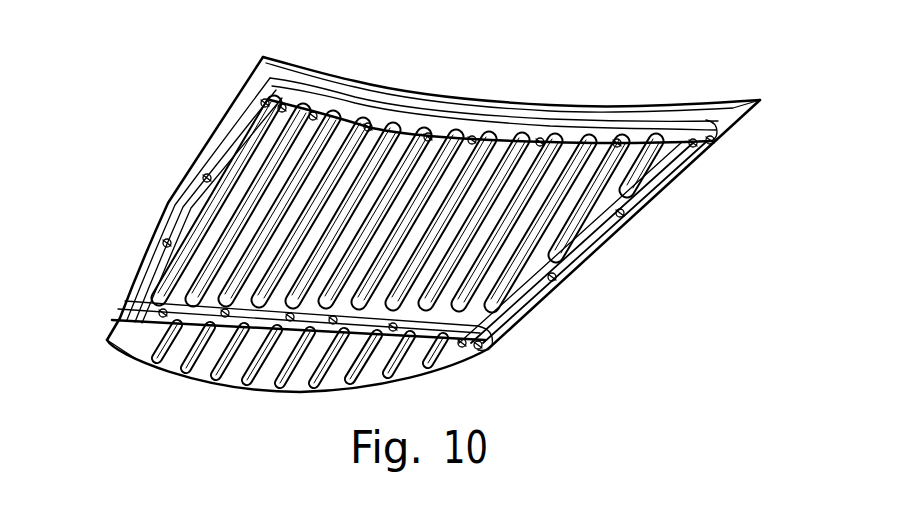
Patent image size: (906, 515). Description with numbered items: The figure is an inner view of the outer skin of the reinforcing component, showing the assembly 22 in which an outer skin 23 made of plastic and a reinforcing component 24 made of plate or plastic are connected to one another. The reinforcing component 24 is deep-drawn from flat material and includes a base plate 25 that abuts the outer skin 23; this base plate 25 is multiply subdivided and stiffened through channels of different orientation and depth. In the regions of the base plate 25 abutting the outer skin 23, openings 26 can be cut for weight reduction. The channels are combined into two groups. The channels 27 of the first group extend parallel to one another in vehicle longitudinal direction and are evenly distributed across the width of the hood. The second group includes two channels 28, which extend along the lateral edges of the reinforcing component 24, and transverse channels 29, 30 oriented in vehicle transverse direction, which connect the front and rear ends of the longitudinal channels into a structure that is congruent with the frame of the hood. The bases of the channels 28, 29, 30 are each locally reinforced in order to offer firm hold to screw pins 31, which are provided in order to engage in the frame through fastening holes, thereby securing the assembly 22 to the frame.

The assembly 22 is at (122, 190).
The outer skin 23 is at (290, 62).
The reinforcing component 24 is at (238, 145).
The base plate 25 is at (360, 135).
The openings 26 is at (520, 167).
The channels of the first group 27 is at (470, 360).
The channels 28 is at (137, 270).
The transverse channels 29 is at (180, 327).
The transverse channels 30 is at (407, 117).
The screw pins 31 is at (620, 140).